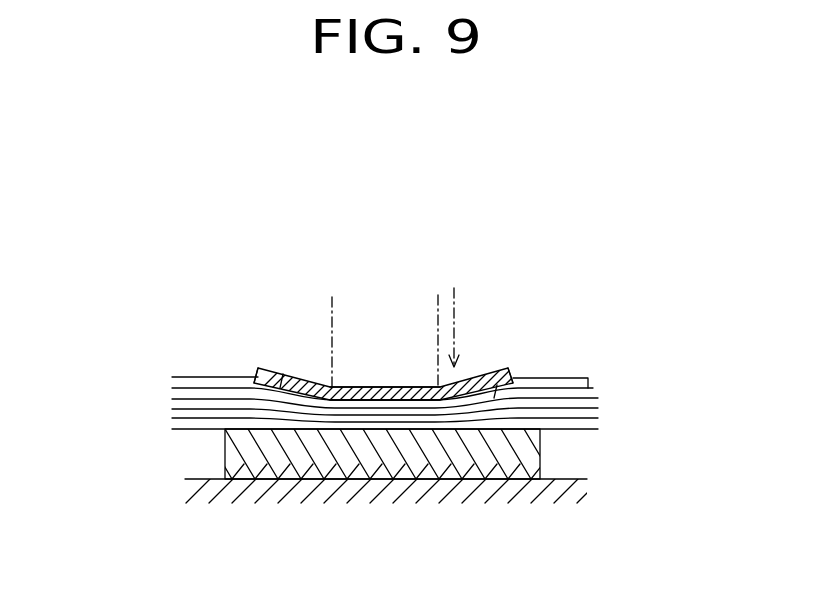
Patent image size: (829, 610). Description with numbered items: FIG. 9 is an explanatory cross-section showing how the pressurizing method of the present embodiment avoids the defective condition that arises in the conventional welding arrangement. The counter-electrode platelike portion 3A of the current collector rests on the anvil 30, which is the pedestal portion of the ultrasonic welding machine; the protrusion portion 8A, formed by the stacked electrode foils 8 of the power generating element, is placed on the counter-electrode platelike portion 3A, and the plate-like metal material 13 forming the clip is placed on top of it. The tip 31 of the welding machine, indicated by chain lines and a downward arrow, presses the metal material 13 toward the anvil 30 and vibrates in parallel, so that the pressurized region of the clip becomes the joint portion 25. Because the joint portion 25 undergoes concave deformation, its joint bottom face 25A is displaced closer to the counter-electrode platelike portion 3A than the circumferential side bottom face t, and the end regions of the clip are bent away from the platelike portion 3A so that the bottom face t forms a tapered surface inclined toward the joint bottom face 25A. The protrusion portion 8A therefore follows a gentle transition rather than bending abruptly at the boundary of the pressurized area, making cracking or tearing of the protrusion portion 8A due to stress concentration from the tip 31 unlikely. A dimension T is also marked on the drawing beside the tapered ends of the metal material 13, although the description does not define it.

The electrode foil 8 is at (393, 375).
The protrusion portion 8A is at (172, 428).
The joint portion 25 is at (360, 390).
The joint bottom face 25A is at (362, 400).
The metal material 13 is at (379, 385).
The tip 31 is at (327, 327).
The tape thickness T is at (278, 380).
The circumferential side bottom face t is at (283, 374).
The counter-electrode platelike portion 3A is at (528, 465).
The anvil 30 is at (212, 479).